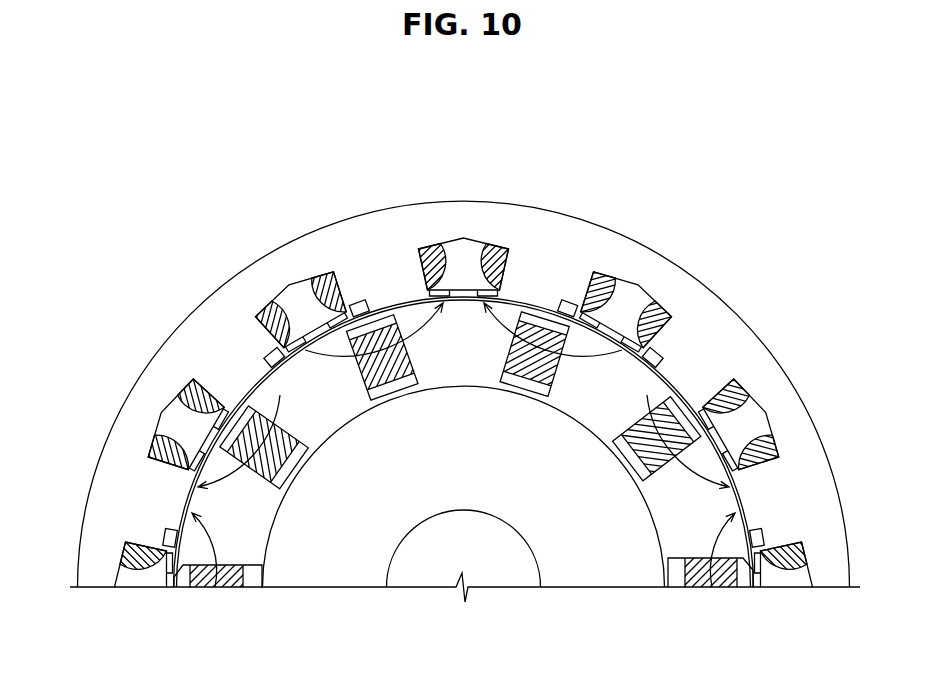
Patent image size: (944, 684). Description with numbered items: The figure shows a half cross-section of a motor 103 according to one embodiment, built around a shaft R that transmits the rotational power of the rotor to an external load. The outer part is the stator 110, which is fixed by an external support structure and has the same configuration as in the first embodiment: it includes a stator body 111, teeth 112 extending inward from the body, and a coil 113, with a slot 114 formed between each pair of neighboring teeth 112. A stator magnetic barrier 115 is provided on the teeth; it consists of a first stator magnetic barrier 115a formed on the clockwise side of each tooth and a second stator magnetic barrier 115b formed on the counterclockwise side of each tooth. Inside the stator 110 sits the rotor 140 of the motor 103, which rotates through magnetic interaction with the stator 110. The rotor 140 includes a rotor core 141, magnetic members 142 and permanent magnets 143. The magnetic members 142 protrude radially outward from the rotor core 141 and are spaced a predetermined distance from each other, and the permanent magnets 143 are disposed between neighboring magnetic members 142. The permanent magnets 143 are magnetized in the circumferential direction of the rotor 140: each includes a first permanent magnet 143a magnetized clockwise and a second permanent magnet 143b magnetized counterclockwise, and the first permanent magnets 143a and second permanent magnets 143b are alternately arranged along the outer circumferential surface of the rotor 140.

The motor 103 is at (718, 118).
The stator 110 is at (128, 598).
The stator body 111 is at (549, 244).
The teeth 112 is at (382, 292).
The coil 113 is at (427, 250).
The slot 114 is at (470, 257).
The stator magnetic barrier 115 is at (225, 180).
The first stator magnetic barrier 115a is at (268, 350).
The second stator magnetic barrier 115b is at (343, 290).
The rotor 140 is at (193, 598).
The rotor core 141 is at (314, 579).
The magnetic members 142 is at (345, 422).
The permanent magnets 143 is at (512, 444).
The first permanent magnet 143a is at (397, 370).
The second permanent magnet 143b is at (530, 370).
The shaft R is at (508, 578).